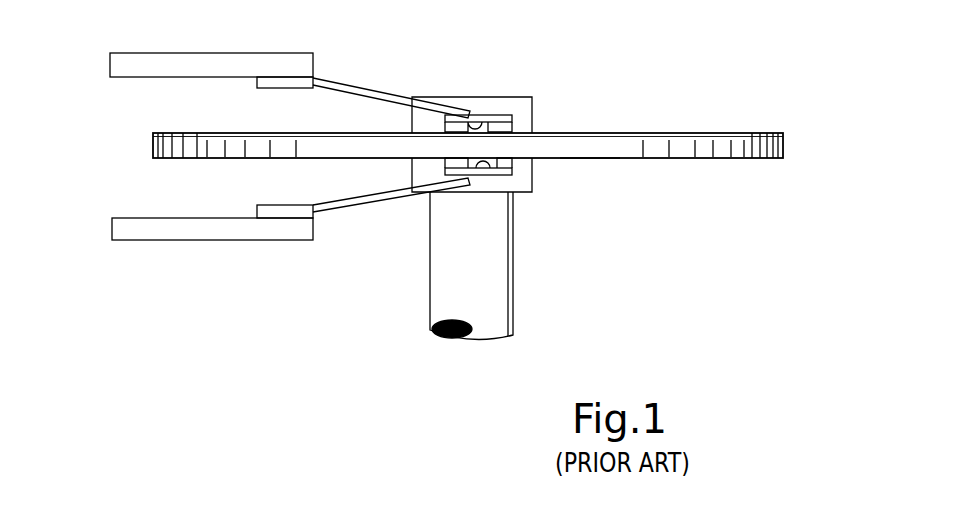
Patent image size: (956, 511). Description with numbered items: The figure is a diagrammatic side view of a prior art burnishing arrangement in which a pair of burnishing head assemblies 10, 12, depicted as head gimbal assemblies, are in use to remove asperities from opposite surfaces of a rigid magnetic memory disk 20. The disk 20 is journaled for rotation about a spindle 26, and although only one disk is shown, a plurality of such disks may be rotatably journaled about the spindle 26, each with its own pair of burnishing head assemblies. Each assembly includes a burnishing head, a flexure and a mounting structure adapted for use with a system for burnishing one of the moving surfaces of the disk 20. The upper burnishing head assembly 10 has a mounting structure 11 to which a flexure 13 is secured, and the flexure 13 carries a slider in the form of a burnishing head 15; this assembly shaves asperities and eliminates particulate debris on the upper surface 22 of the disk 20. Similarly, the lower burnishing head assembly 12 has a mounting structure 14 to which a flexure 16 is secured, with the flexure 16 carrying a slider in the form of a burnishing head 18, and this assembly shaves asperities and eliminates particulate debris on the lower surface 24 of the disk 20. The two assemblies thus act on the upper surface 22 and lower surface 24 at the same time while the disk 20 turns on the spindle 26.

The upper burnishing head assembly 10 is at (395, 80).
The mounting structure 11 is at (223, 65).
The lower burnishing head assembly 12 is at (395, 230).
The flexure 13 is at (327, 88).
The mounting structure 14 is at (148, 232).
The burnishing head 15 is at (478, 127).
The flexure 16 is at (340, 192).
The burnishing head 18 is at (482, 166).
The rigid magnetic memory disk 20 is at (743, 157).
The upper surface 22 is at (618, 132).
The lower surface 24 is at (588, 158).
The spindle 26 is at (495, 290).